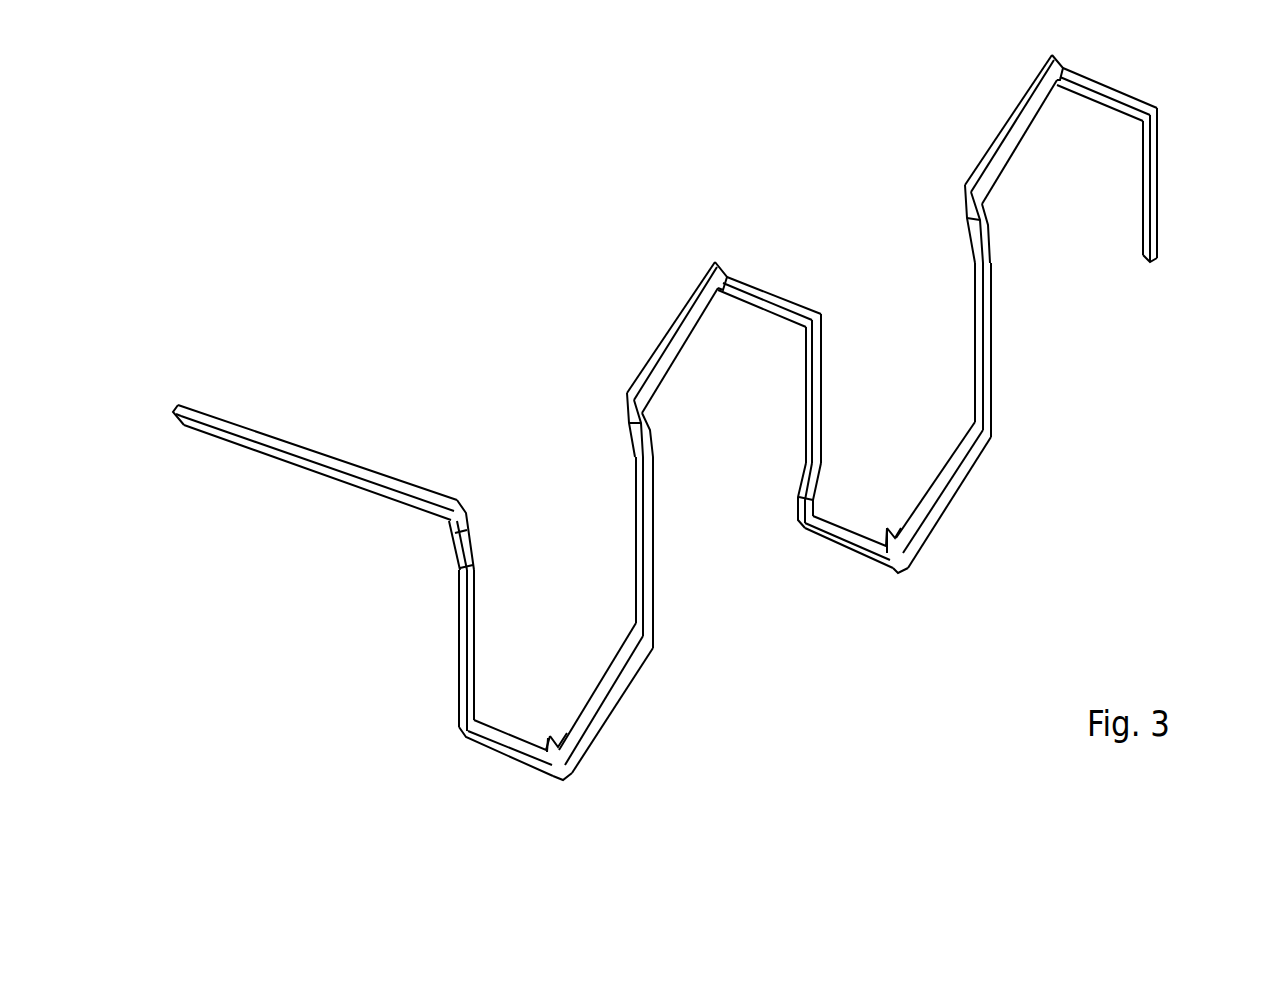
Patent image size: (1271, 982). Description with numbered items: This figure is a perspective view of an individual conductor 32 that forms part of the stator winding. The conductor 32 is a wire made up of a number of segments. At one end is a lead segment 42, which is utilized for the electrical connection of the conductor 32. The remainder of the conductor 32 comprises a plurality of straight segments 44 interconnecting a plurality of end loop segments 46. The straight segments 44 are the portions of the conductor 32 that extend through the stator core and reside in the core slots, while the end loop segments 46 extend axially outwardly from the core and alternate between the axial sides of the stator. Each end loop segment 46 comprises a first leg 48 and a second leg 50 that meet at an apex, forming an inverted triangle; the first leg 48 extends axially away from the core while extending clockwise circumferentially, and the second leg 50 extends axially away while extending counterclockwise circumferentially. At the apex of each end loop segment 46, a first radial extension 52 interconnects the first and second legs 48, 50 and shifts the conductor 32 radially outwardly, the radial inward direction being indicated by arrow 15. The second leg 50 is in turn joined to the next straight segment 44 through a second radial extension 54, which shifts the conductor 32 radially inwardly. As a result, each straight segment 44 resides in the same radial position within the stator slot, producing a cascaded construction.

The radial inward direction arrow 15 is at (1108, 358).
The conductor 32 is at (704, 424).
The lead segment 42 is at (255, 455).
The straight segments 44 is at (478, 617).
The end loop segments 46 is at (792, 424).
The first leg 48 is at (620, 688).
The second leg 50 is at (490, 747).
The first radial extension 52 is at (556, 754).
The second radial extension 54 is at (447, 552).